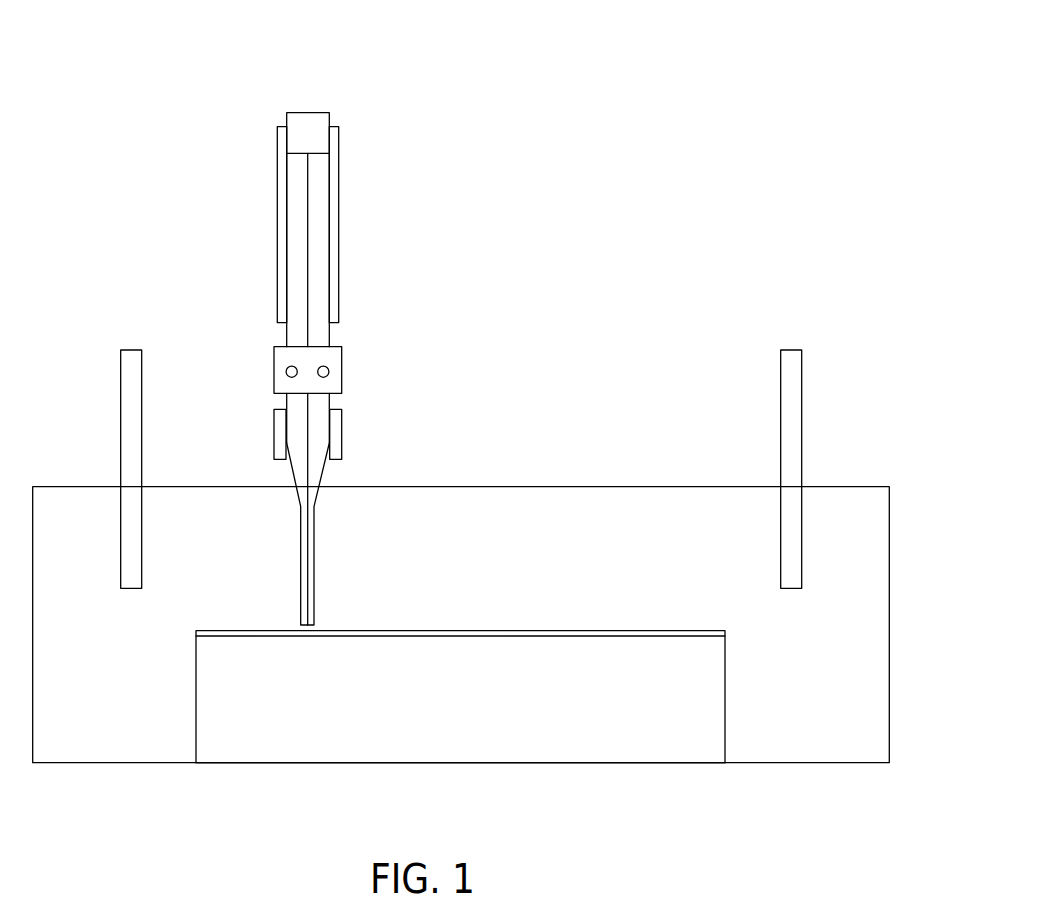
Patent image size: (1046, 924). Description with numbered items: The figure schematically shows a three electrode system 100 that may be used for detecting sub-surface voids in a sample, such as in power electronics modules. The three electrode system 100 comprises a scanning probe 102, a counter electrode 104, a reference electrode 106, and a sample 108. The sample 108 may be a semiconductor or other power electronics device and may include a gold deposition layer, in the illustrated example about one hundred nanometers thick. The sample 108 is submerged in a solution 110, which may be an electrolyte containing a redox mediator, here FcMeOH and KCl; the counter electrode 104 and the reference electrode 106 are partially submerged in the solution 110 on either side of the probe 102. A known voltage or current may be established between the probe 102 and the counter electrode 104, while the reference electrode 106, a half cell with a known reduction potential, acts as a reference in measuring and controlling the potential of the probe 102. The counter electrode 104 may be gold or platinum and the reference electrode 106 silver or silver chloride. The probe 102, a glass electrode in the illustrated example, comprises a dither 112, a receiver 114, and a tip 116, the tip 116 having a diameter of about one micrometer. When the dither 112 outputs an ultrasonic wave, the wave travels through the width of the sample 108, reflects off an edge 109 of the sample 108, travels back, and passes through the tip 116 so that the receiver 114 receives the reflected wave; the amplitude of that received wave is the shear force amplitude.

The three electrode system 100 is at (586, 104).
The scanning probe 102 is at (319, 210).
The counter electrode 104 is at (128, 414).
The reference electrode 106 is at (794, 415).
The sample 108 is at (575, 752).
The edge 109 is at (462, 763).
The solution 110 is at (605, 490).
The dither 112 is at (343, 370).
The receiver 114 is at (343, 434).
The tip 116 is at (316, 572).